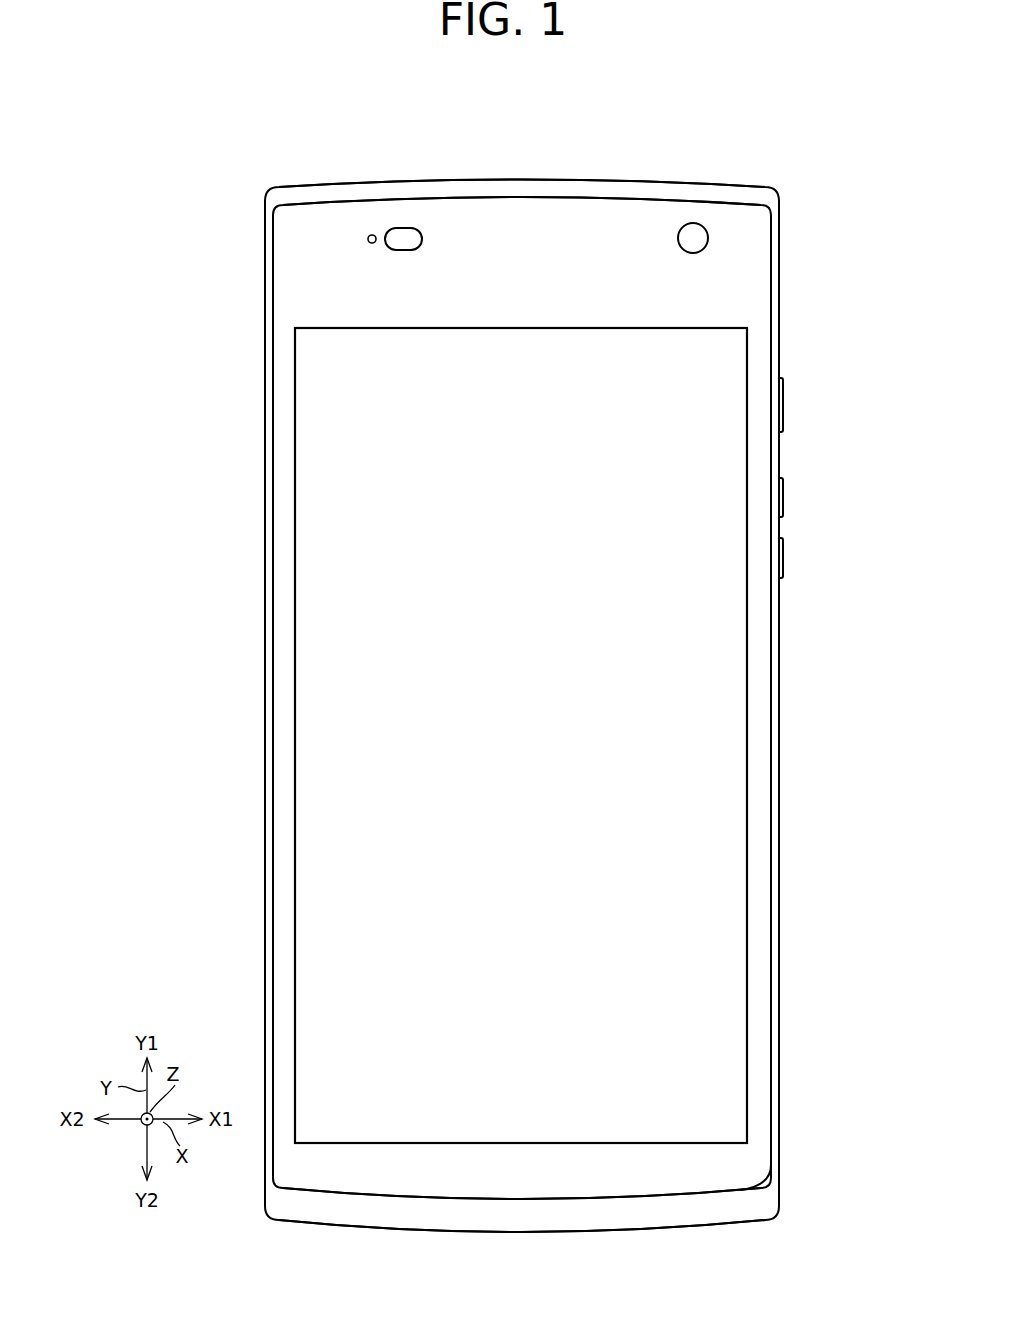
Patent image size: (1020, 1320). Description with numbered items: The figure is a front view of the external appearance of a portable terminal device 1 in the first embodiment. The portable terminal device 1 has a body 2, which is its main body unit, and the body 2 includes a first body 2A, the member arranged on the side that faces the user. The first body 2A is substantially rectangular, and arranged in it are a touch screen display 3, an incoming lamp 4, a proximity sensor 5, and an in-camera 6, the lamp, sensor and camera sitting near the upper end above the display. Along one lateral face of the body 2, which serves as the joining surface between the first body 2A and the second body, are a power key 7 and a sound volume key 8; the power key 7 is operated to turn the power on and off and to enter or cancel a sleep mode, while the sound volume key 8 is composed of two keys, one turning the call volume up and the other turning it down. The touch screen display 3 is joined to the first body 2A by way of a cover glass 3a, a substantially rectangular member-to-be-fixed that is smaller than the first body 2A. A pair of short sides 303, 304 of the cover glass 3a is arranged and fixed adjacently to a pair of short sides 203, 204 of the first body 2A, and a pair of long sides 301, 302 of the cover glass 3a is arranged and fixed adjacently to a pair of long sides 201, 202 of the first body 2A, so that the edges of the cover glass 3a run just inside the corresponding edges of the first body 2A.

The portable terminal device 1 is at (744, 135).
The body 2 is at (782, 181).
The first body 2A is at (755, 277).
The touch screen display 3 is at (732, 677).
The cover glass 3a is at (765, 1185).
The incoming lamp 4 is at (372, 234).
The proximity sensor 5 is at (405, 230).
The in-camera 6 is at (694, 224).
The power key 7 is at (783, 405).
The sound volume key 8 is at (790, 474).
The long side of first body 201 is at (778, 805).
The long side of first body 202 is at (266, 516).
The short side of first body 203 is at (496, 181).
The short side of first body 204 is at (312, 1225).
The long side of cover glass 301 is at (771, 757).
The long side of cover glass 302 is at (273, 466).
The short side of cover glass 303 is at (560, 197).
The short side of cover glass 304 is at (378, 1195).